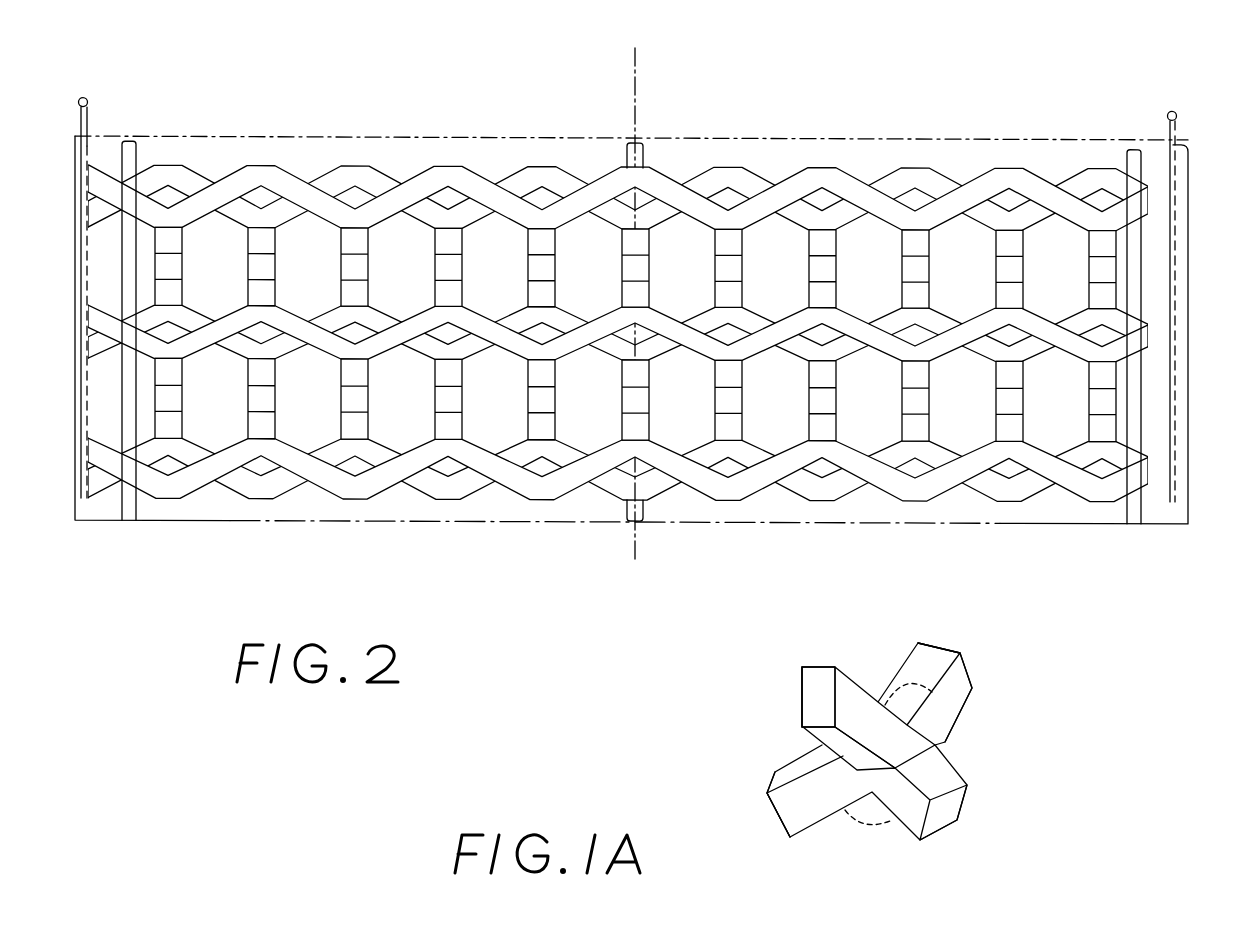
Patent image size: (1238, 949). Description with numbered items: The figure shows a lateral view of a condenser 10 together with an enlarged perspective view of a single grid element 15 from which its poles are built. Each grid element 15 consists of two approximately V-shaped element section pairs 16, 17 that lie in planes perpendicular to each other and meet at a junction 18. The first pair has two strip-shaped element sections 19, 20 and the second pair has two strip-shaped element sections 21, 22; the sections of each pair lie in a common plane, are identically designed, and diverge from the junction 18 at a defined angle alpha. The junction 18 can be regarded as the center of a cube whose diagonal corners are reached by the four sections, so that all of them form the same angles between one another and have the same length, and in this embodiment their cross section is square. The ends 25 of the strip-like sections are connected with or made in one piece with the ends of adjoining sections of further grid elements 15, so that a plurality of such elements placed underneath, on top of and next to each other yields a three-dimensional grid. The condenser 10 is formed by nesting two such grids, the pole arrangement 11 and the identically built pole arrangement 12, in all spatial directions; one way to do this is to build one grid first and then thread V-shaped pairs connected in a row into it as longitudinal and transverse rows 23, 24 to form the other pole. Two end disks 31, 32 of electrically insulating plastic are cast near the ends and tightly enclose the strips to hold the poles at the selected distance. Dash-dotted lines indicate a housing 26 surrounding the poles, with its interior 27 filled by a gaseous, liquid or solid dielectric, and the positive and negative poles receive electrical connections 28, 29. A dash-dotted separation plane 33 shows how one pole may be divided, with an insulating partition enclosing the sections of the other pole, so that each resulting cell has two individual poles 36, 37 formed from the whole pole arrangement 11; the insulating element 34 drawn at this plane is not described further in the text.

In FIG. 2, the condenser 10 is at (956, 133).
In FIG. 2, the pole arrangement 11 is at (228, 161).
In FIG. 2, the pole arrangement 12 is at (357, 161).
In FIG. 2, the longitudinal row 23 is at (758, 164).
In FIG. 2, the transverse row 24 is at (843, 253).
In FIG. 2, the housing 26 is at (297, 134).
In FIG. 2, the interior 27 is at (498, 249).
In FIG. 2, the electrical connection 28 is at (78, 122).
In FIG. 2, the electrical connection 29 is at (1178, 132).
In FIG. 2, the end disk 31 is at (133, 147).
In FIG. 2, the end disk 32 is at (1137, 147).
In FIG. 2, the separation plane 33 is at (642, 57).
In FIG. 2, the center post 34 is at (627, 152).
In FIG. 2, the individual pole 36 is at (441, 164).
In FIG. 2, the individual pole 37 is at (820, 164).
In FIG. 1A, the grid element 15 is at (1015, 689).
In FIG. 1A, the V-shaped element section pair 16 is at (877, 680).
In FIG. 1A, the V-shaped element section pair 17 is at (838, 821).
In FIG. 1A, the junction 18 is at (897, 743).
In FIG. 1A, the strip-shaped element section 19 is at (818, 670).
In FIG. 1A, the strip-shaped element section 20 is at (957, 685).
In FIG. 1A, the strip-shaped element section 21 is at (763, 817).
In FIG. 1A, the strip-shaped element section 22 is at (950, 800).
In FIG. 1A, the end 25 is at (941, 652).